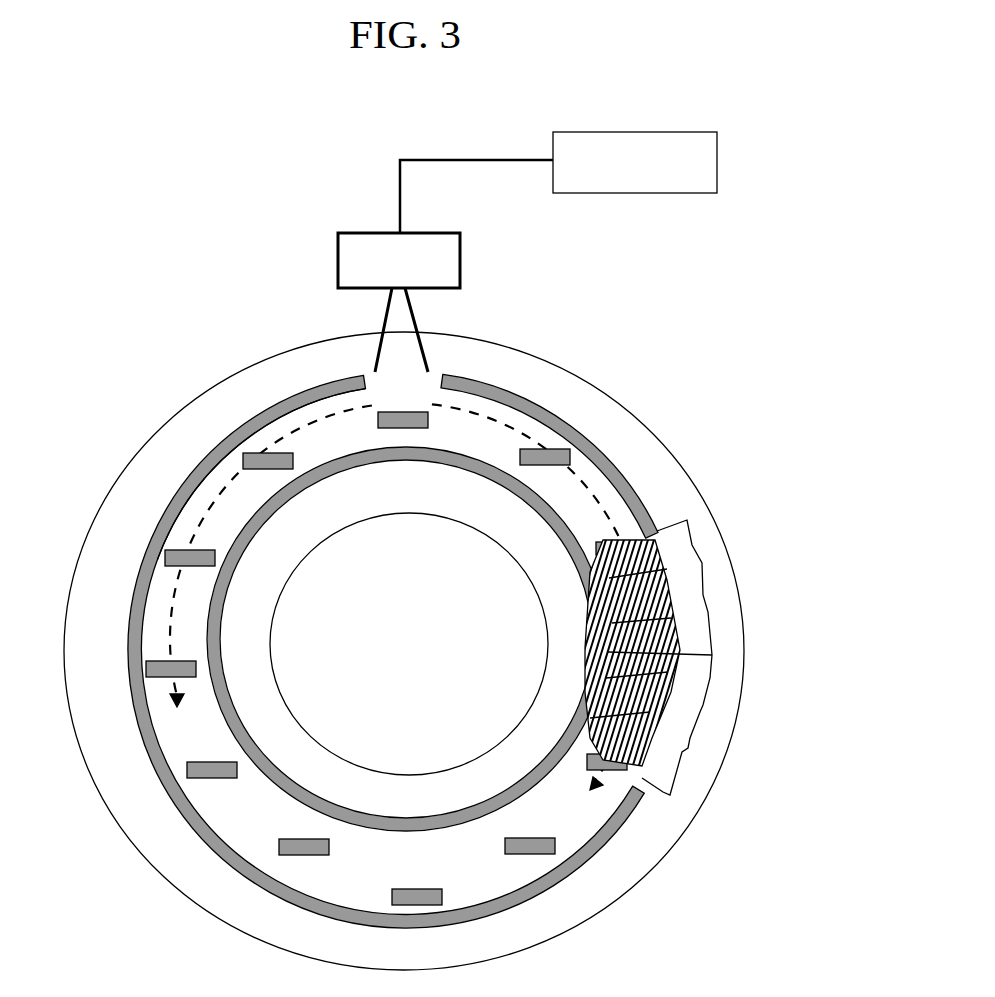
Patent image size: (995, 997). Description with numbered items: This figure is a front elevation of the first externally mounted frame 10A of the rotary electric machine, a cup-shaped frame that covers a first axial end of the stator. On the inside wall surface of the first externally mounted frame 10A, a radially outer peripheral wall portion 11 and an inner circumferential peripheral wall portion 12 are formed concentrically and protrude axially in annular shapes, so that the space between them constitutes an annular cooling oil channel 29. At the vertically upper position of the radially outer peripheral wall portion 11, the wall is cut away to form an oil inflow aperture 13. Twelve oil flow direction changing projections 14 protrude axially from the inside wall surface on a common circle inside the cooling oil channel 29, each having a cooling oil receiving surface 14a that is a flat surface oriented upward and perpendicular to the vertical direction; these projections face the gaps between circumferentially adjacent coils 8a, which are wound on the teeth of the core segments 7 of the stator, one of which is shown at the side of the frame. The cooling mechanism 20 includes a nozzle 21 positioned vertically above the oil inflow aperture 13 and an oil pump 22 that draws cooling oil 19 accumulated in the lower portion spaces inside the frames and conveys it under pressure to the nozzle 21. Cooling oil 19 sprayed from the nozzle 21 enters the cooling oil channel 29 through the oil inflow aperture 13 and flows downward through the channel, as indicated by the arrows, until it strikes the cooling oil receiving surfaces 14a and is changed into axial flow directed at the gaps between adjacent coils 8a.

The first externally mounted frame 10A is at (163, 429).
The radially outer peripheral wall portion 11 is at (548, 402).
The inner circumferential peripheral wall portion 12 is at (570, 520).
The oil inflow aperture 13 is at (428, 382).
The oil flow direction changing projections 14 is at (555, 442).
The cooling oil receiving surfaces 14a is at (187, 550).
The cooling oil 19 is at (430, 347).
The cooling mechanism 20 is at (508, 150).
The nozzle 21 is at (460, 264).
The oil pump 22 is at (625, 195).
The cooling oil channel 29 is at (287, 418).
The core segments 7 is at (688, 540).
The coils 8a is at (660, 604).